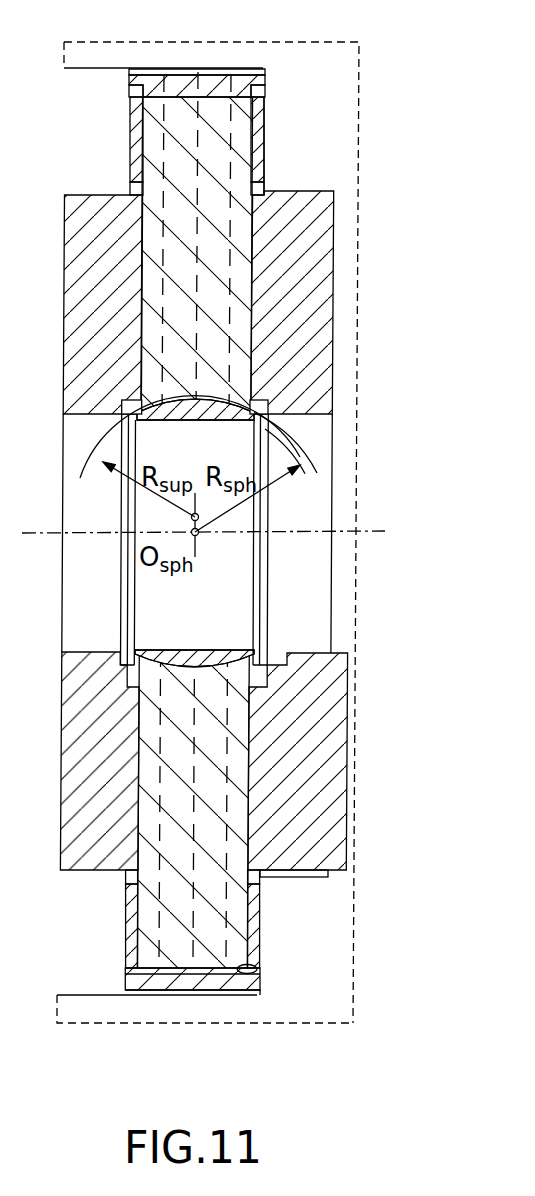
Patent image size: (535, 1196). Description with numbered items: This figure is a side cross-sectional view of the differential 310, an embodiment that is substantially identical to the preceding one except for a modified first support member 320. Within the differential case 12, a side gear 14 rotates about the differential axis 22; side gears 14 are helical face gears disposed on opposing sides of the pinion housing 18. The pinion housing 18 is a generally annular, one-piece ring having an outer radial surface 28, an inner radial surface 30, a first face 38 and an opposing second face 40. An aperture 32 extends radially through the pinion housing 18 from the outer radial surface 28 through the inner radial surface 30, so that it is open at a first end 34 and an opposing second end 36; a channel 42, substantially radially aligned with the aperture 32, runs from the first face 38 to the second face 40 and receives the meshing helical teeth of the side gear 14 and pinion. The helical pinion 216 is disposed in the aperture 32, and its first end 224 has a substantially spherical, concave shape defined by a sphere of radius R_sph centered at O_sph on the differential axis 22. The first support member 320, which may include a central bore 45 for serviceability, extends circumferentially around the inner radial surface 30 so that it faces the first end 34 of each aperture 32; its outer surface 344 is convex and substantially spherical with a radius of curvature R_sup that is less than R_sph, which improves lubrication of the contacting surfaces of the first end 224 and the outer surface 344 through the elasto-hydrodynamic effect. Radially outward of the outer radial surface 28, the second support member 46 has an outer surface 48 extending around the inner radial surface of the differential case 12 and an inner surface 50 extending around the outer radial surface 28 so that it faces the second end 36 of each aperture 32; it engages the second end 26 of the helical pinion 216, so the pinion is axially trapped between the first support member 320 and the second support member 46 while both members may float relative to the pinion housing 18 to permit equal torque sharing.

The differential case 12 is at (335, 982).
The side gear 14 is at (322, 382).
The pinion housing 18 is at (264, 115).
The differential axis 22 is at (352, 533).
The second end of the helical pinion 26 is at (233, 95).
The outer radial surface 28 is at (133, 70).
The inner radial surface 30 is at (130, 403).
The aperture 32 is at (143, 95).
The first end of the aperture 34 is at (268, 404).
The second end of the aperture 36 is at (255, 90).
The first face 38 is at (130, 115).
The second face 40 is at (265, 152).
The channel 42 is at (229, 972).
The central bore 45 is at (148, 518).
The second support member 46 is at (137, 980).
The outer surface 48 is at (235, 988).
The inner surface 50 is at (248, 968).
The helical pinion 216 is at (172, 178).
The first end of the helical pinion 224 is at (317, 473).
The differential 310 is at (428, 192).
The first support member 320 is at (137, 414).
The outer surface 344 is at (160, 663).